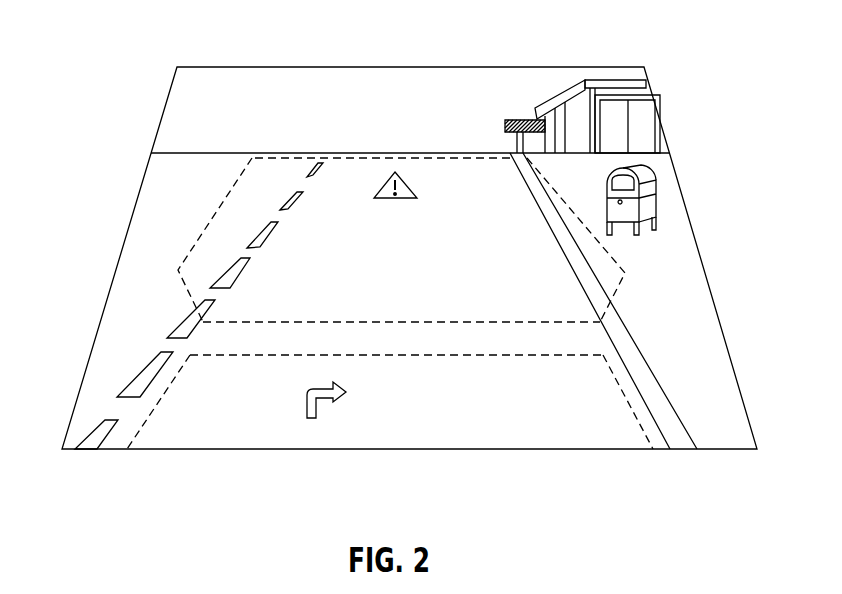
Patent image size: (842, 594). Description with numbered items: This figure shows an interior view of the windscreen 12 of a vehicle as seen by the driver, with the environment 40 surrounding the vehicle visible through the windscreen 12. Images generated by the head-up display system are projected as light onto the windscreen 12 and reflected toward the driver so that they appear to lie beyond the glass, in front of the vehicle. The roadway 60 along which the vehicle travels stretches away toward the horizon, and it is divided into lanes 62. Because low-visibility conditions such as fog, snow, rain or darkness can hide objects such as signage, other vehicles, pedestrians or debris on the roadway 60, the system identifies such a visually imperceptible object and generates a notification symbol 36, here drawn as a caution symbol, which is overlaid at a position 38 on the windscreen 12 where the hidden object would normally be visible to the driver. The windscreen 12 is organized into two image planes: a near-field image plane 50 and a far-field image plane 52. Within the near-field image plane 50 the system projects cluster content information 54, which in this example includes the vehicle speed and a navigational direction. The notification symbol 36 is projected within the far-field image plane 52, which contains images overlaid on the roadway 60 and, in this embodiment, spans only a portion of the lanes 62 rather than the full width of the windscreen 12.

The windscreen 12 is at (675, 165).
The notification symbol 36 is at (382, 186).
The position 38 is at (421, 185).
The environment 40 is at (187, 105).
The near-field image plane 50 is at (642, 400).
The far-field image plane 52 is at (185, 253).
The cluster content information 54 is at (418, 400).
The roadway 60 is at (108, 365).
The lanes 62 is at (147, 167).